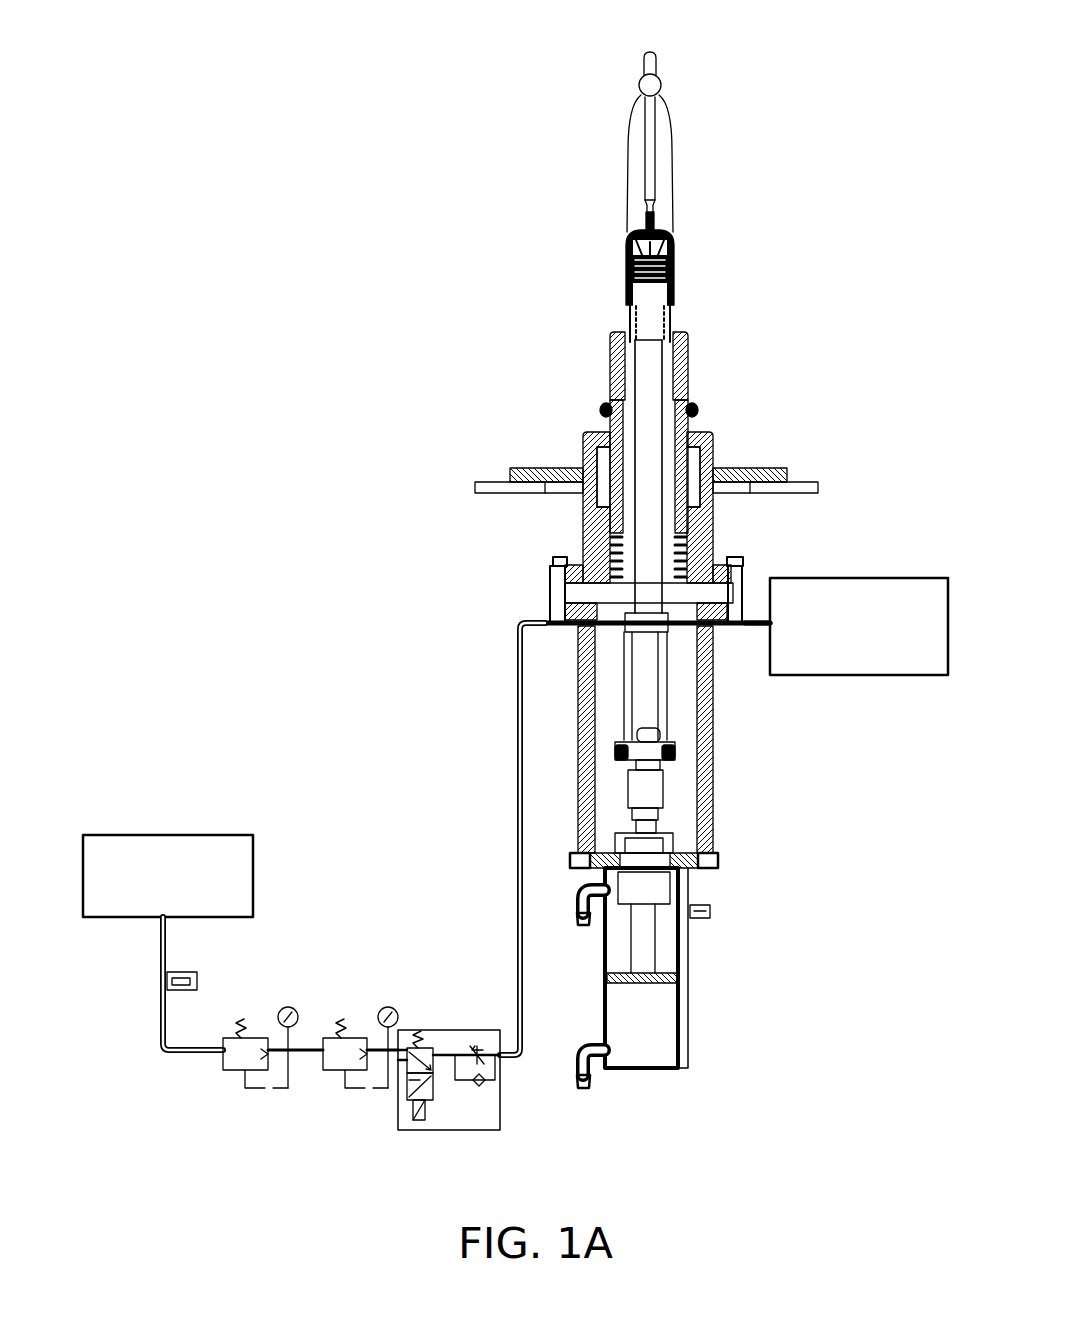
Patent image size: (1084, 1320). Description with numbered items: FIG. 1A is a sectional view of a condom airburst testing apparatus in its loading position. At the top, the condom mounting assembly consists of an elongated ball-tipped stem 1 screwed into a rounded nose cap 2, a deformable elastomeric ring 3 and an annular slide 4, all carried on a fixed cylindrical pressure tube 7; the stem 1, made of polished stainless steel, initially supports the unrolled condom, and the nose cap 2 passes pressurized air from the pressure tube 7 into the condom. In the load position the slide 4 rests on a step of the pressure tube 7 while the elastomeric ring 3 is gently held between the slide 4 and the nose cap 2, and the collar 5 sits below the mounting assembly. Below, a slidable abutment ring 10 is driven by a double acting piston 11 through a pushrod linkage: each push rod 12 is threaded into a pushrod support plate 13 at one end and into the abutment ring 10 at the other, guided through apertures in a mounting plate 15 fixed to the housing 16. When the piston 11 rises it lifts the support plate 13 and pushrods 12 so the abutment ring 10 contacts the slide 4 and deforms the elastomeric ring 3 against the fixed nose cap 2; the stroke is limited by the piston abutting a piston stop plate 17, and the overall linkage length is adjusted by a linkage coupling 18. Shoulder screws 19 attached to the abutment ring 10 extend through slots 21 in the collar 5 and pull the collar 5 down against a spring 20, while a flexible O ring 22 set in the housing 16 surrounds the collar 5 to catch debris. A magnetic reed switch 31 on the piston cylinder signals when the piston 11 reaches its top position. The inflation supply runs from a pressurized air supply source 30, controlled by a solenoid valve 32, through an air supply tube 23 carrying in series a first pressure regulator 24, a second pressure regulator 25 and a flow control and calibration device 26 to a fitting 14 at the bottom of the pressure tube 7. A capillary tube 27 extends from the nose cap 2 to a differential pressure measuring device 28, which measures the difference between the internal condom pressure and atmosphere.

The elongated stem 1 is at (653, 163).
The nose cap 2 is at (670, 250).
The deformable elastomeric ring 3 is at (670, 280).
The slide 4 is at (670, 310).
The collar 5 is at (688, 358).
The pressure tube 7 is at (657, 392).
The slidable abutment ring 10 is at (697, 442).
The double acting piston 11 is at (668, 995).
The push rod 12 is at (657, 748).
The pushrod support plate 13 is at (652, 790).
The fitting 14 is at (653, 628).
The mounting plate 15 is at (693, 597).
The housing 16 is at (713, 507).
The piston stop plate 17 is at (647, 890).
The linkage coupling 18 is at (673, 850).
The shoulder screws 19 is at (603, 410).
The spring 20 is at (580, 543).
The slots 21 is at (696, 410).
The O ring 22 is at (592, 427).
The air supply tube 23 is at (517, 840).
The first pressure regulator 24 is at (255, 1038).
The second pressure regulator 25 is at (350, 1038).
The flow control and calibration device 26 is at (482, 1030).
The capillary tube 27 is at (755, 627).
The differential pressure measuring device 28 is at (795, 675).
The pressurized air supply source 30 is at (205, 835).
The magnetic reed switch 31 is at (702, 920).
The solenoid valve 32 is at (185, 991).